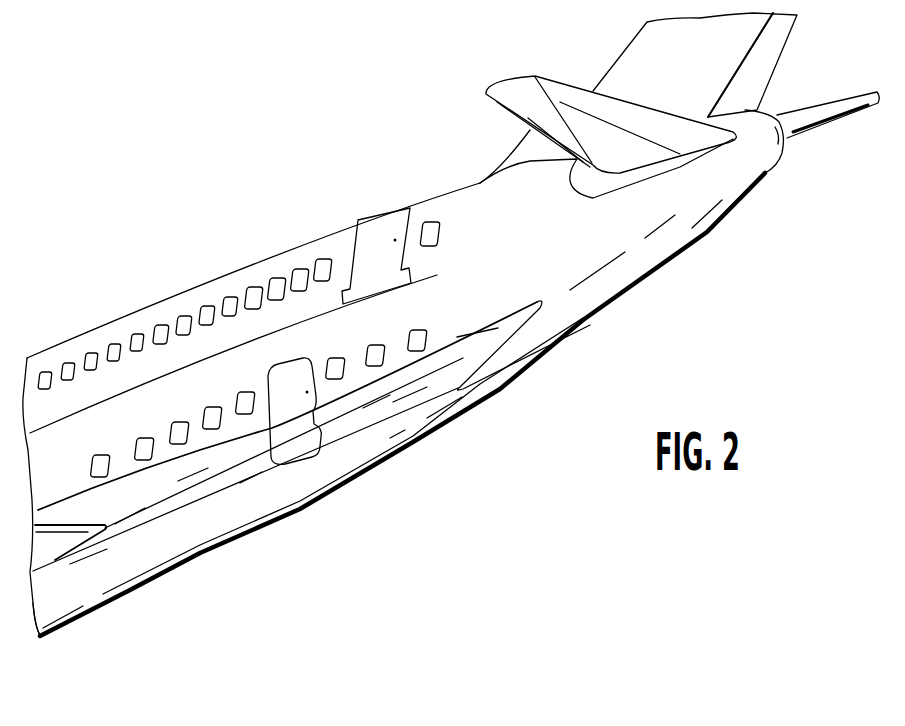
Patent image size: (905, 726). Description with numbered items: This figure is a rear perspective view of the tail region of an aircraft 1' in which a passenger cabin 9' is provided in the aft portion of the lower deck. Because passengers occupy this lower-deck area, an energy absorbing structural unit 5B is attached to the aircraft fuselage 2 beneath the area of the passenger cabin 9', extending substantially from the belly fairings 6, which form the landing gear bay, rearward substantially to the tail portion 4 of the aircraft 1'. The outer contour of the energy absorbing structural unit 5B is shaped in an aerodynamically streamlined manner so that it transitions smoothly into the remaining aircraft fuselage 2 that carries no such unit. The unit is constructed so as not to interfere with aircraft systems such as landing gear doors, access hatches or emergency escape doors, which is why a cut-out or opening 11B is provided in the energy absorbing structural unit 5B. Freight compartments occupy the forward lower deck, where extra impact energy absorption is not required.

The aircraft 1' is at (451, 324).
The aircraft fuselage 2 is at (180, 390).
The passenger cabin 9' is at (287, 429).
The cut-out or opening 11B is at (317, 443).
The energy absorbing structural unit 5B is at (191, 548).
The tail portion 4 is at (580, 312).
The belly fairings 6 is at (38, 633).